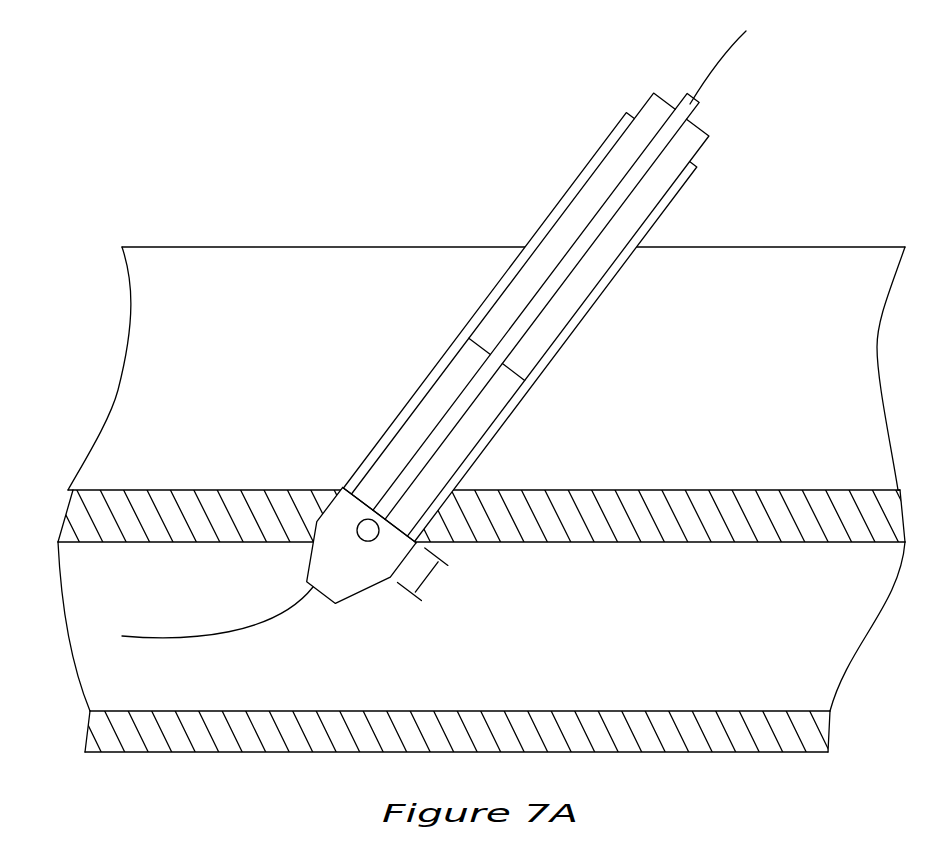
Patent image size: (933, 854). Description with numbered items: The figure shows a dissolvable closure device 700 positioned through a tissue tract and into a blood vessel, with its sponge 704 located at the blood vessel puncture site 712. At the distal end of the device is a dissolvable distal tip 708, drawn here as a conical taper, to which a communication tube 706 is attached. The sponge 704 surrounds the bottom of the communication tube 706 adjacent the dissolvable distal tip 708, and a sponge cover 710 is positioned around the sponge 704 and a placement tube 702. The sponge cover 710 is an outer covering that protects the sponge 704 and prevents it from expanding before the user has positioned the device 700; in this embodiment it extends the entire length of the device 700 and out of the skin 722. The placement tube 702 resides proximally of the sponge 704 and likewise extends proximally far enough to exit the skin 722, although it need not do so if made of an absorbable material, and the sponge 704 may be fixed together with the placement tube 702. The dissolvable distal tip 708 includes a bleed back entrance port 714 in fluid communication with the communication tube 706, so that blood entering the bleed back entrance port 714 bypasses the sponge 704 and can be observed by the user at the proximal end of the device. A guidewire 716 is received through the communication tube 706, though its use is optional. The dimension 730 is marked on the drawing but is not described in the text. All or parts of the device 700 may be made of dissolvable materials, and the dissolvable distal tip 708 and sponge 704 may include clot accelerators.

The dissolvable closure device 700 is at (449, 337).
The placement tube 702 is at (692, 145).
The sponge 704 is at (492, 405).
The communication tube 706 is at (690, 107).
The dissolvable distal tip 708 is at (360, 592).
The sponge cover 710 is at (670, 200).
The blood vessel puncture site 712 is at (338, 490).
The bleed back entrance port 714 is at (358, 528).
The guidewire 716 is at (721, 53).
The skin 722 is at (848, 247).
The gap distance 730 is at (432, 570).